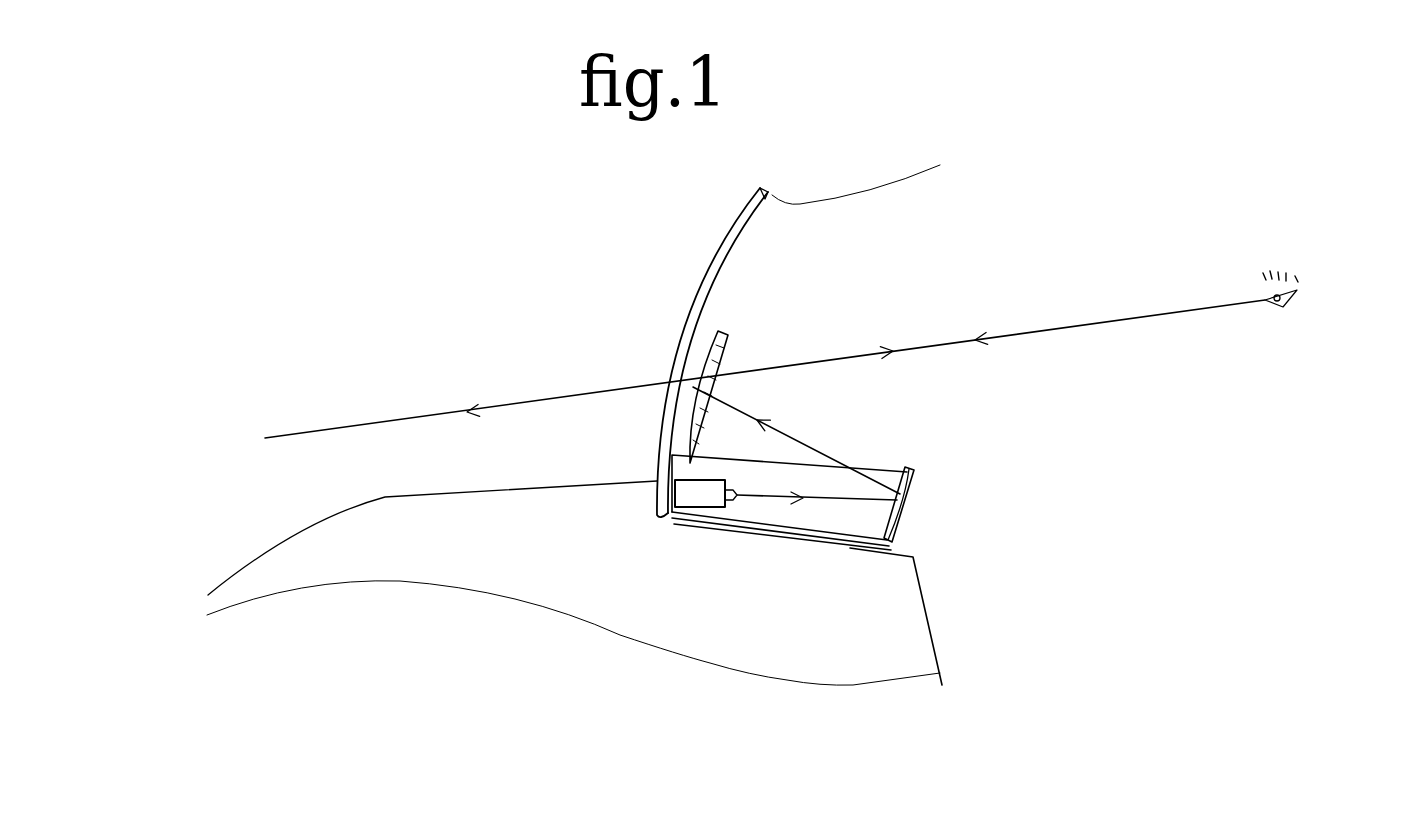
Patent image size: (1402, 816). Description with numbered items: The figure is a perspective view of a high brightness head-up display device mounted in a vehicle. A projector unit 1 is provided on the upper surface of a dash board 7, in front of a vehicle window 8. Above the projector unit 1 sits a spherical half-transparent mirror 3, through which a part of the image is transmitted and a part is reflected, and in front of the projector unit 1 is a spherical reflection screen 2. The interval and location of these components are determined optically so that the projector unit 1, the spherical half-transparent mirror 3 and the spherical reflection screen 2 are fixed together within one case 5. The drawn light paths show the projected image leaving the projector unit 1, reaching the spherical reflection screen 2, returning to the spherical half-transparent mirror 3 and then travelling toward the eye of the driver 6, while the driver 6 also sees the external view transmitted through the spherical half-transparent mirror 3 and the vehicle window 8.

The projector unit 1 is at (700, 497).
The spherical reflection screen 2 is at (910, 502).
The spherical half-transparent mirror 3 is at (718, 360).
The case 5 is at (860, 540).
The driver 6 is at (1297, 258).
The dash board 7 is at (285, 553).
The vehicle window 8 is at (705, 290).